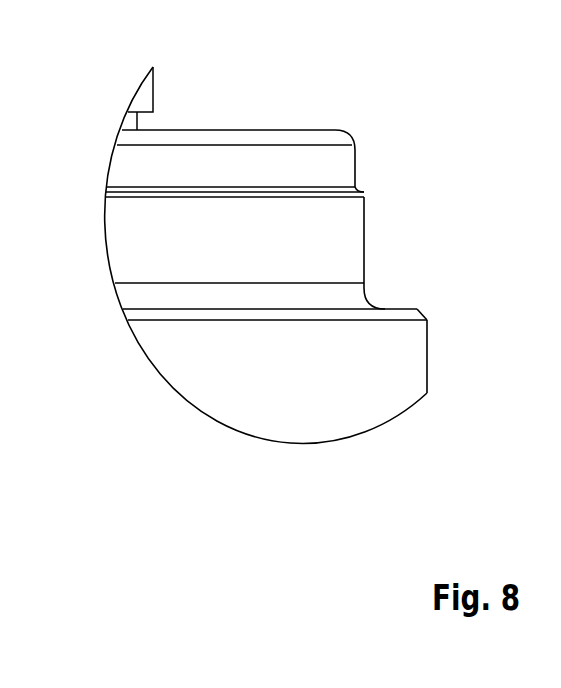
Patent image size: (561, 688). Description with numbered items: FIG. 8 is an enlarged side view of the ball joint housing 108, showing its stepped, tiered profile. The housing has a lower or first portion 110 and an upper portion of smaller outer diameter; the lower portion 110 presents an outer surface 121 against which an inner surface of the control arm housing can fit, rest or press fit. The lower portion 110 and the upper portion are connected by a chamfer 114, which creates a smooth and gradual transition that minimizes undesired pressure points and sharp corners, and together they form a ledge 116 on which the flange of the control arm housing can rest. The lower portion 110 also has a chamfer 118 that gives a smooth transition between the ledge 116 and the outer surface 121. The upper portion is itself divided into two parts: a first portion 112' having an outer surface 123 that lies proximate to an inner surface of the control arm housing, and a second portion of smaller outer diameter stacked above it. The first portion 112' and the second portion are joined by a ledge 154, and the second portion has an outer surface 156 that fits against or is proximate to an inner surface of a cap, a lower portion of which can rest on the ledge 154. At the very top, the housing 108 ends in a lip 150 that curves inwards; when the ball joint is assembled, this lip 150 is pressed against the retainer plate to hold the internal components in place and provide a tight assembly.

The ball joint housing 108 is at (475, 70).
The lower portion 110 is at (212, 370).
The first portion 112' is at (193, 254).
The chamfer 114 is at (368, 295).
The ledge 116 is at (402, 308).
The chamfer 118 is at (421, 312).
The outer surface 121 is at (427, 358).
The outer surface 123 is at (365, 225).
The lip 150 is at (330, 137).
The ledge 154 is at (362, 190).
The outer surface 156 is at (357, 163).